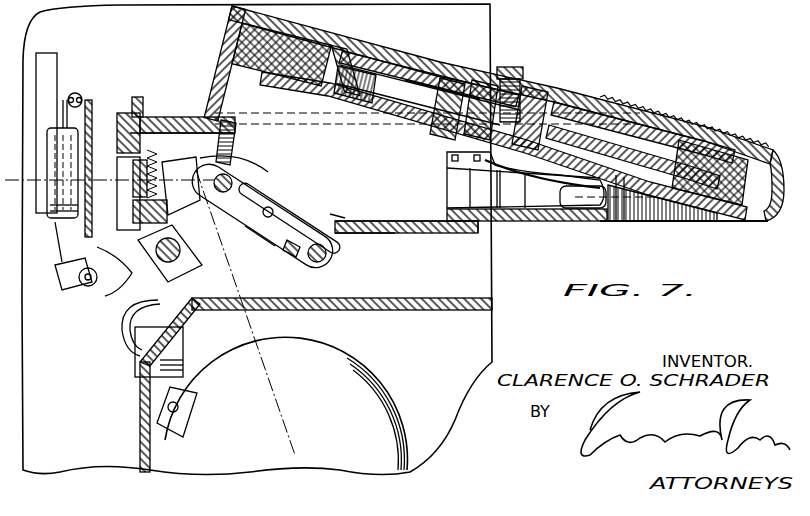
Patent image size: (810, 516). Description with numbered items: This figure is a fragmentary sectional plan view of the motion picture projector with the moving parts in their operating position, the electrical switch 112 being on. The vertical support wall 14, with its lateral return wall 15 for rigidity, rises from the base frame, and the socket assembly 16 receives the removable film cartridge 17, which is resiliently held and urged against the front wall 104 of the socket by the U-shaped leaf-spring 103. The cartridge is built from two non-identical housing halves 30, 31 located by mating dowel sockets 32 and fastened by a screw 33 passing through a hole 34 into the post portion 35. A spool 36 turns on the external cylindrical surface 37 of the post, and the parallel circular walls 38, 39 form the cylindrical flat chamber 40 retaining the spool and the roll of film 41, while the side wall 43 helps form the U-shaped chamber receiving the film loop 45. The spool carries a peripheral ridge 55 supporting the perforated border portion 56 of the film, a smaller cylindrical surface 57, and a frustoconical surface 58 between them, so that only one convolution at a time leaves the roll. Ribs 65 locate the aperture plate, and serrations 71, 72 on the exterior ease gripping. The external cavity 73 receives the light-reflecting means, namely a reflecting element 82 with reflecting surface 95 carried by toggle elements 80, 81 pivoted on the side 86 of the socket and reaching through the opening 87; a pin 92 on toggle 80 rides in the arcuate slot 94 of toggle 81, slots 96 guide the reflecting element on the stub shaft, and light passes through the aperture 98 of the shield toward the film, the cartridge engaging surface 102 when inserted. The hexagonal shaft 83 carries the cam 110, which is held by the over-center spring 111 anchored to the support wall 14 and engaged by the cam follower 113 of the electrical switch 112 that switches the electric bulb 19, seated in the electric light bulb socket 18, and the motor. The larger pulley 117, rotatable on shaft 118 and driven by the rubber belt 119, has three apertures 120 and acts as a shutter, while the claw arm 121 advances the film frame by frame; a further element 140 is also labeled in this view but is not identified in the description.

The vertical support wall 14 is at (140, 420).
The lateral return wall 15 is at (472, 312).
The socket assembly 16 is at (472, 235).
The film cartridge 17 is at (618, 98).
The electric light bulb socket 18 is at (184, 416).
The electric bulb 19 is at (384, 388).
The housing half 30 is at (582, 228).
The housing half 31 is at (451, 62).
The mating dowel sockets 32 is at (573, 198).
The screw 33 is at (518, 77).
The hole 34 is at (508, 68).
The post portion 35 is at (527, 117).
The spool 36 is at (407, 80).
The external cylindrical surface 37 is at (560, 126).
The circular wall 38 is at (650, 198).
The circular wall 39 is at (660, 135).
The cylindrical flat chamber 40 is at (772, 222).
The roll of film 41 is at (778, 162).
The side wall 43 is at (188, 118).
The film loop 45 is at (497, 190).
The peripheral ridge 55 is at (345, 47).
The perforated border portion 56 is at (310, 24).
The cylindrical surface 57 is at (323, 88).
The frustoconical surface 58 is at (310, 85).
The ribs 65 is at (168, 118).
The serrations 71 is at (730, 222).
The serrations 72 is at (712, 140).
The external cavity 73 is at (416, 206).
The toggle element 80 is at (261, 266).
The toggle element 81 is at (282, 174).
The reflecting element 82 is at (295, 203).
The hexagonal shaft 83 is at (112, 290).
The side of socket 86 is at (461, 232).
The opening 87 is at (342, 213).
The pin 92 is at (236, 142).
The arcuate slot 94 is at (270, 168).
The reflecting surface 95 is at (262, 228).
The slots 96 is at (270, 246).
The aperture 98 is at (185, 192).
The surface 102 is at (288, 194).
The leaf-spring 103 is at (368, 244).
The front wall 104 is at (145, 112).
The cam 110 is at (110, 289).
The over-center spring 111 is at (122, 349).
The electrical switch 112 is at (57, 72).
The cam follower 113 is at (80, 293).
The pulley 117 is at (92, 112).
The shaft 118 is at (184, 352).
The rubber belt 119 is at (80, 96).
The apertures 120 is at (112, 192).
The claw arm 121 is at (128, 148).
The cable 140 is at (55, 238).